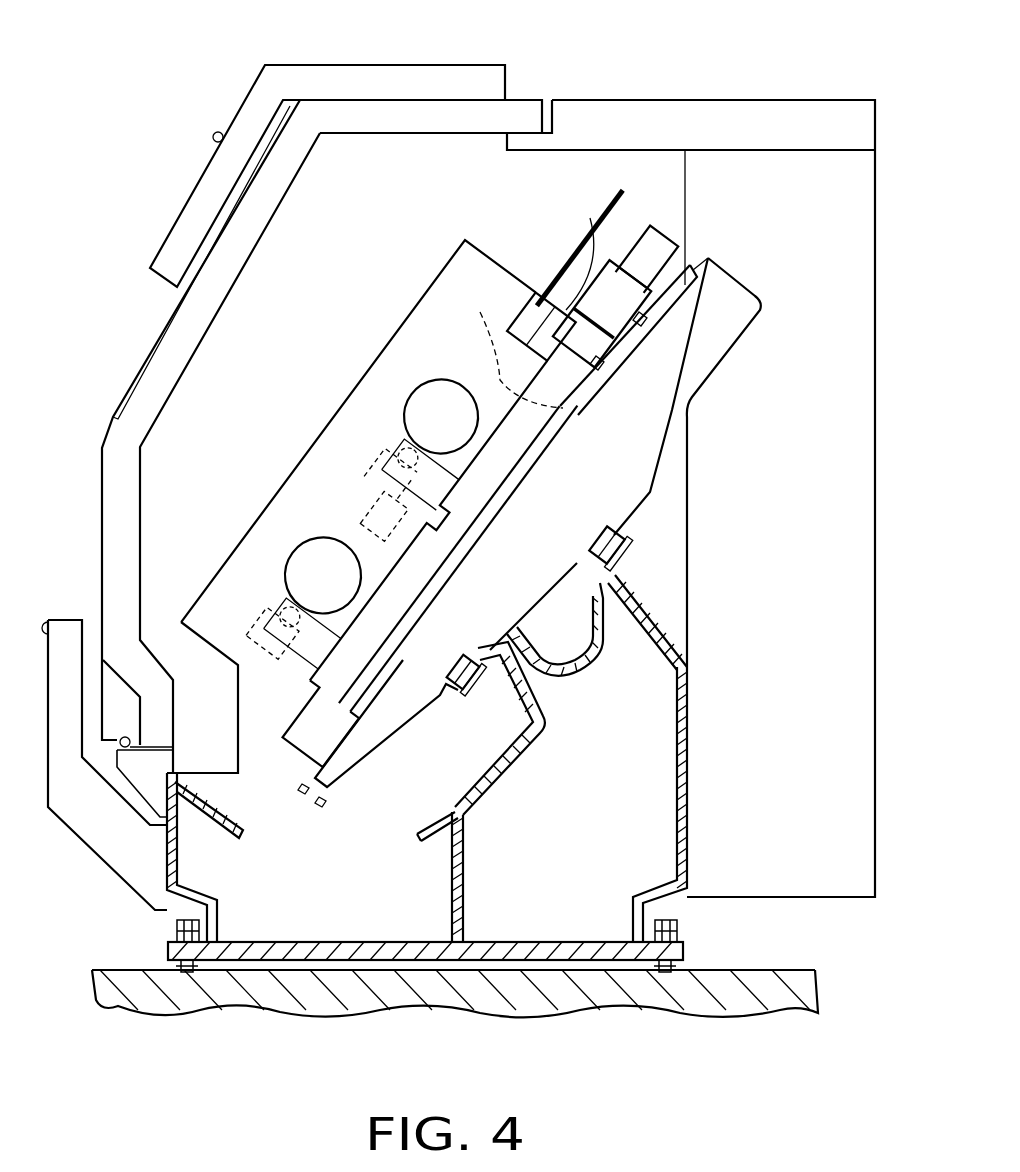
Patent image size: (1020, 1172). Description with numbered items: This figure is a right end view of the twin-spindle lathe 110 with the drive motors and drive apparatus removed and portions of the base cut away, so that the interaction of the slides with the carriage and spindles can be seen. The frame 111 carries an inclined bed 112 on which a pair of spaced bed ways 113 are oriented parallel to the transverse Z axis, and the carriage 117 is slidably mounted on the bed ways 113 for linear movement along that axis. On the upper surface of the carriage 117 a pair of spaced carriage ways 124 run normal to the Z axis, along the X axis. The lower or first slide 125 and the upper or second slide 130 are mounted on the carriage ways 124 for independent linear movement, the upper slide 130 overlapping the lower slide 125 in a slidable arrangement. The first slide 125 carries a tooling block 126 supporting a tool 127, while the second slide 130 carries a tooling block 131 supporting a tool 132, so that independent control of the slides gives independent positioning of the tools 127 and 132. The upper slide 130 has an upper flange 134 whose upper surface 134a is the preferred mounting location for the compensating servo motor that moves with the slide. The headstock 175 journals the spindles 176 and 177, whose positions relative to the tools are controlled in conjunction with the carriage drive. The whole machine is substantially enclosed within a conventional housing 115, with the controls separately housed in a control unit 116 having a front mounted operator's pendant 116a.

The twin-spindle lathe 110 is at (315, 52).
The frame 111 is at (688, 837).
The inclined bed 112 is at (640, 598).
The bed ways 113 is at (612, 540).
The housing 115 is at (382, 122).
The control unit 116 is at (792, 512).
The operator's pendant 116a is at (187, 225).
The carriage 117 is at (350, 763).
The carriage ways 124 is at (312, 722).
The first slide 125 is at (383, 632).
The tooling block 126 is at (443, 567).
The tool 127 is at (363, 523).
The second slide 130 is at (520, 460).
The tooling block 131 is at (563, 408).
The tool 132 is at (488, 350).
The upper flange 134 is at (547, 297).
The upper surface of flange 134a is at (583, 245).
The headstock 175 is at (325, 452).
The spindle 176 is at (420, 402).
The spindle 177 is at (297, 555).